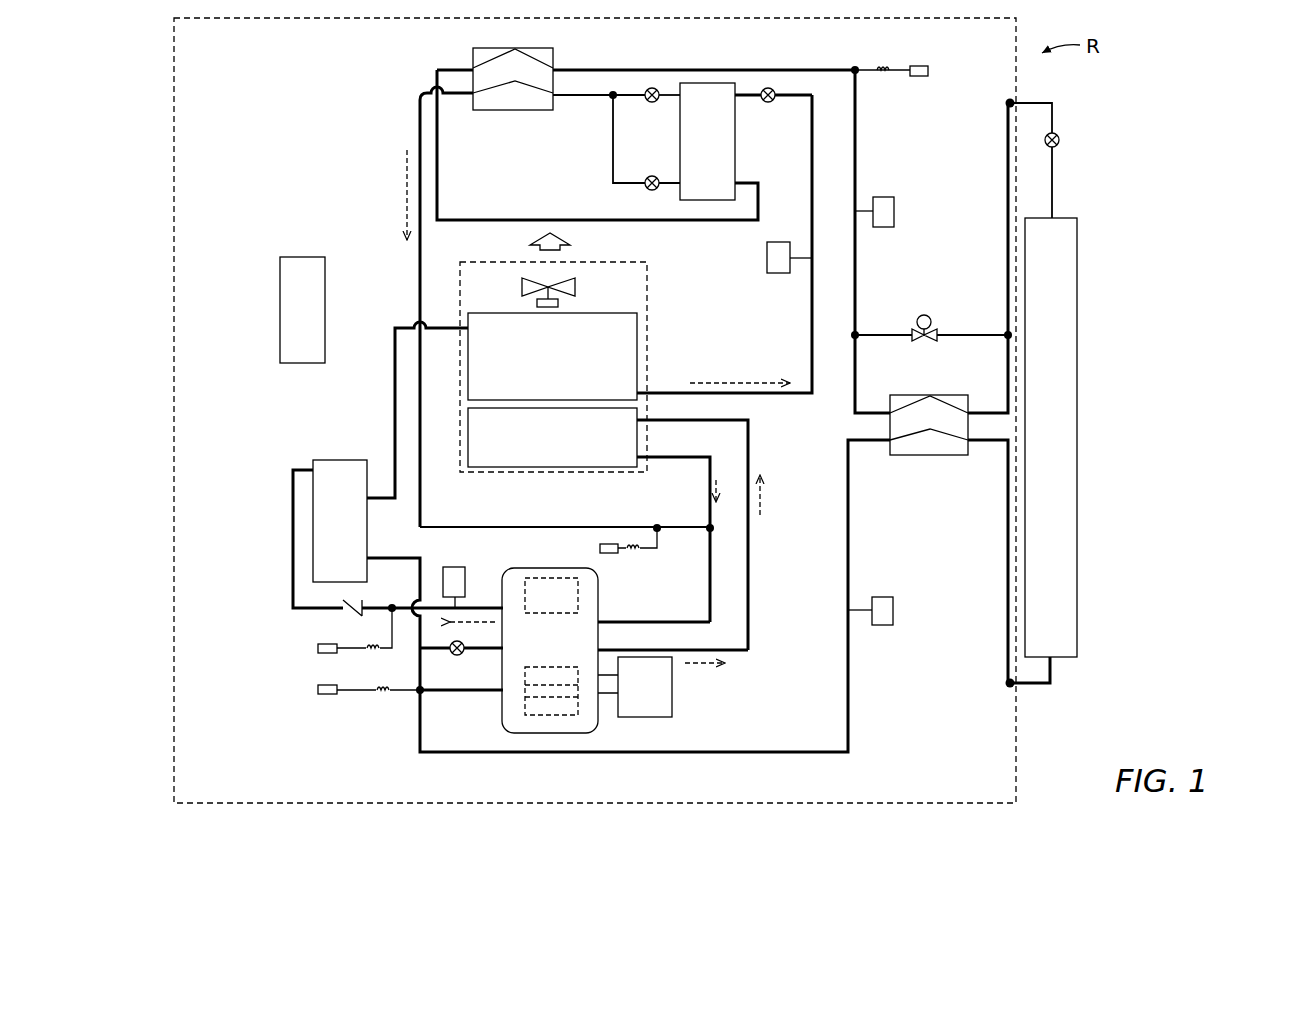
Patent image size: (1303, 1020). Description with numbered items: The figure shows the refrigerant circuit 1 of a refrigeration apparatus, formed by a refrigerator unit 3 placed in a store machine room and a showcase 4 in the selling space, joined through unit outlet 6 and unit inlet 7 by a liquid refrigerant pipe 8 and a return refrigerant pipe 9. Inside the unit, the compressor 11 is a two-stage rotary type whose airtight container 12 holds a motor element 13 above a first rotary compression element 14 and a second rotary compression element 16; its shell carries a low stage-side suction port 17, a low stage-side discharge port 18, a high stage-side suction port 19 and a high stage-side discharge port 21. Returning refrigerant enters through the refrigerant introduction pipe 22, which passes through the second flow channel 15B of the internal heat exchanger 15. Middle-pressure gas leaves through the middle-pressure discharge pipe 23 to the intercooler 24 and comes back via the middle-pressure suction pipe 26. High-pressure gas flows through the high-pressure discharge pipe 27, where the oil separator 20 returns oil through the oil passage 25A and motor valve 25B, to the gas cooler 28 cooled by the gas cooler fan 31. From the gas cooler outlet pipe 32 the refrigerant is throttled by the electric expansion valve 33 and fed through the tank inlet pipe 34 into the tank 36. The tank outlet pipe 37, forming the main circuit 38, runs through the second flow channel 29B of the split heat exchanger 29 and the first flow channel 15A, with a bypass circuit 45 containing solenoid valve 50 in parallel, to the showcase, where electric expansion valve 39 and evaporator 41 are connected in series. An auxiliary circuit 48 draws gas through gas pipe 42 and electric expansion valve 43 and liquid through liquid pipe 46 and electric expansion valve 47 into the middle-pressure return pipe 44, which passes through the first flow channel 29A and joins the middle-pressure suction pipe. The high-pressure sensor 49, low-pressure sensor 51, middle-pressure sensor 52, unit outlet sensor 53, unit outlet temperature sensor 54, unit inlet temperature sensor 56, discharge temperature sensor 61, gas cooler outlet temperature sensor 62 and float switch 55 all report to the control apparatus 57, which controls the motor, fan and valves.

The refrigerant circuit 1 is at (866, 724).
The refrigerator unit 3 is at (162, 135).
The showcase 4 is at (1080, 437).
The unit outlet 6 is at (1016, 100).
The unit inlet 7 is at (1015, 688).
The refrigerant pipe (liquid pipe) 8 is at (1054, 118).
The refrigerant pipe 9 is at (1053, 675).
The compressor 11 is at (533, 622).
The airtight container 12 is at (599, 590).
The motor element 13 is at (570, 567).
The first rotary compression element 14 is at (578, 720).
The internal heat exchanger 15 is at (923, 430).
The first flow channel of internal heat exchanger 15A is at (902, 409).
The second flow channel of internal heat exchanger 15B is at (956, 442).
The second rotary compression element 16 is at (500, 667).
The low stage-side suction port 17 is at (500, 692).
The low stage-side discharge port 18 is at (600, 650).
The high stage-side suction port 19 is at (600, 620).
The oil separator 20 is at (313, 514).
The high stage-side discharge port 21 is at (502, 607).
The refrigerant introduction pipe 22 is at (790, 756).
The middle-pressure discharge pipe 23 is at (752, 615).
The intercooler 24 is at (534, 365).
The oil passage 25A is at (382, 557).
The motor valve 25B is at (451, 652).
The middle-pressure suction pipe 26 is at (713, 565).
The high-pressure discharge pipe 27 is at (293, 595).
The gas cooler 28 is at (640, 353).
The split heat exchanger 29 is at (520, 92).
The first flow channel of split heat exchanger 29A is at (537, 100).
The second flow channel of split heat exchanger 29B is at (490, 56).
The gas cooler fan 31 is at (578, 290).
The gas cooler outlet pipe 32 is at (810, 297).
The electric expansion valve (pressure-regulation throttle section) 33 is at (770, 103).
The tank inlet pipe 34 is at (751, 100).
The tank 36 is at (737, 165).
The tank outlet pipe 37 is at (440, 194).
The main circuit 38 is at (850, 90).
The electric expansion valve (main throttle section) 39 is at (1060, 141).
The evaporator 41 is at (1079, 400).
The gas pipe 42 is at (660, 90).
The electric expansion valve (first auxiliary circuit throttle section) 43 is at (651, 104).
The middle-pressure return pipe 44 is at (418, 127).
The bypass circuit 45 is at (878, 334).
The liquid pipe 46 is at (670, 182).
The electric expansion valve (second auxiliary circuit throttle section) 47 is at (646, 187).
The auxiliary circuit 48 is at (414, 97).
The high-pressure sensor 49 is at (317, 650).
The solenoid valve 50 is at (924, 314).
The low-pressure sensor 51 is at (317, 690).
The middle-pressure sensor 52 is at (607, 544).
The unit outlet sensor 53 is at (920, 78).
The unit outlet temperature sensor 54 is at (895, 212).
The float switch 55 is at (672, 705).
The unit inlet temperature sensor 56 is at (893, 612).
The control apparatus 57 is at (299, 257).
The discharge temperature sensor 61 is at (443, 569).
The gas cooler outlet temperature sensor 62 is at (783, 242).